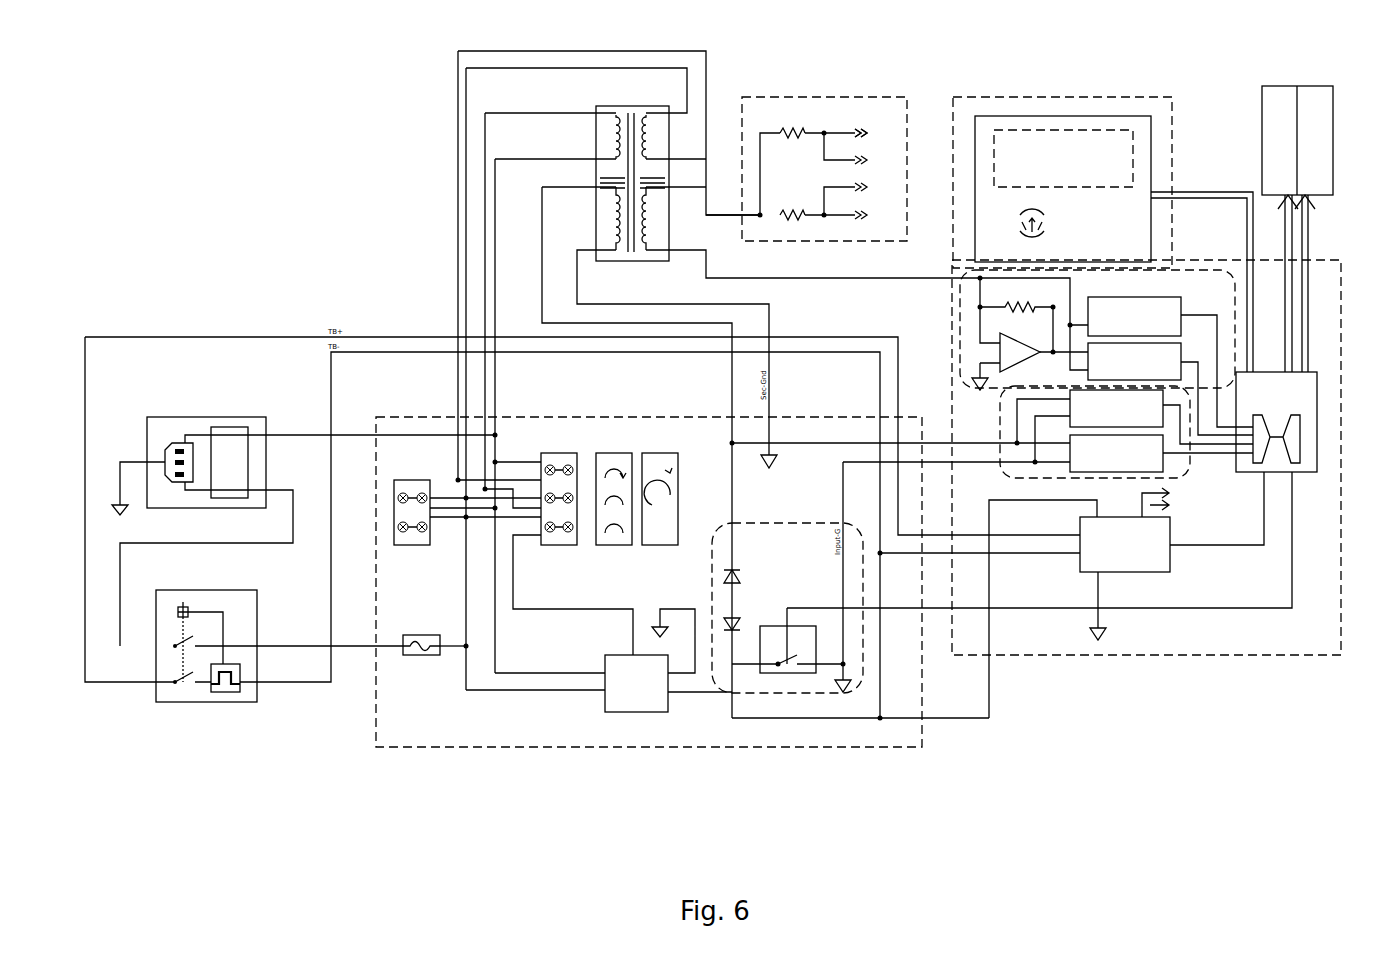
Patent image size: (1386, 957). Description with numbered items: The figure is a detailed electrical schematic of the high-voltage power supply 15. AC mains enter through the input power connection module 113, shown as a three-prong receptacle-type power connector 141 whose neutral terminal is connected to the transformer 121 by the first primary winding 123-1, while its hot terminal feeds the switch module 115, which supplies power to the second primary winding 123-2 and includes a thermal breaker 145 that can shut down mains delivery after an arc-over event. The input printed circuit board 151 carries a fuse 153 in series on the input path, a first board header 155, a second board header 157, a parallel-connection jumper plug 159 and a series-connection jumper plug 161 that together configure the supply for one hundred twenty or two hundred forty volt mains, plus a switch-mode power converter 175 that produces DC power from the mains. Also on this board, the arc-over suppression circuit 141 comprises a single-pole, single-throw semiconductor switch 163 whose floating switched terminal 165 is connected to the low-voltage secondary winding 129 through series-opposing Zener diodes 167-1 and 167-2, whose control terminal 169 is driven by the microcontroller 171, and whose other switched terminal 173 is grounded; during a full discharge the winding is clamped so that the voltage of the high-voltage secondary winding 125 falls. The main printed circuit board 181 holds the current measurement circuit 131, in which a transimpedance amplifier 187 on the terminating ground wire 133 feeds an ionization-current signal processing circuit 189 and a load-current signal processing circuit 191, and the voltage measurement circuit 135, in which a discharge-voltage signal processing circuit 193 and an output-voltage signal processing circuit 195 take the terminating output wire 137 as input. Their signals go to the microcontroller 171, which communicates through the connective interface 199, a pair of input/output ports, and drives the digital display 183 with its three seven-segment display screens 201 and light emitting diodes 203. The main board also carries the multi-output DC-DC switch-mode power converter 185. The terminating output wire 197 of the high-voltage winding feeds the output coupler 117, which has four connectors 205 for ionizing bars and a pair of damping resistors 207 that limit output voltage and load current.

The power supply 15 is at (211, 837).
The input power connection module 113 is at (258, 417).
The switch module 115 is at (160, 702).
The output coupler 117 is at (763, 97).
The transformer 121 is at (636, 261).
The first primary winding 123-1 is at (620, 118).
The second primary winding 123-2 is at (643, 121).
The high-voltage secondary winding 125 is at (648, 197).
The low-voltage secondary winding 129 is at (616, 197).
The current measurement circuit 131 is at (956, 285).
The terminating ground wire 133 is at (820, 278).
The voltage measurement circuit 135 is at (1000, 470).
The terminating output wire 137 is at (542, 272).
The power connector 141 is at (168, 452).
The thermal breaker 145 is at (225, 692).
The input printed circuit board 151 is at (425, 747).
The fuse 153 is at (415, 655).
The first board header 155 is at (405, 546).
The second board header 157 is at (550, 546).
The parallel-connection jumper plug 159 is at (606, 546).
The series-connection jumper plug 161 is at (661, 546).
The semiconductor-circuit switch 163 is at (790, 673).
The switched terminal 165 is at (770, 673).
The Zener diode 167-1 is at (741, 576).
The Zener diode 167-2 is at (733, 632).
The control terminal 169 is at (820, 608).
The microcontroller 171 is at (1320, 453).
The switched terminal 173 is at (820, 668).
The switch-mode power converter 175 is at (634, 712).
The main printed circuit board 181 is at (997, 657).
The digital display 183 is at (1001, 97).
The multi-output DC-DC switch-mode power converter 185 is at (1140, 573).
The transimpedance amplifier 187 is at (1013, 365).
The ionization-current signal processing circuit 189 is at (1181, 307).
The load-current signal processing circuit 191 is at (1181, 358).
The discharge-voltage signal processing circuit 193 is at (1070, 405).
The output-voltage signal processing circuit 195 is at (1130, 478).
The terminating output wire 197 is at (727, 216).
The connective interface 199 is at (1262, 86).
The 7-segment digital display screens 201 is at (1128, 188).
The light emitting diodes 203 is at (1046, 234).
The connectors 205 is at (860, 128).
The damping resistors 207 is at (808, 135).